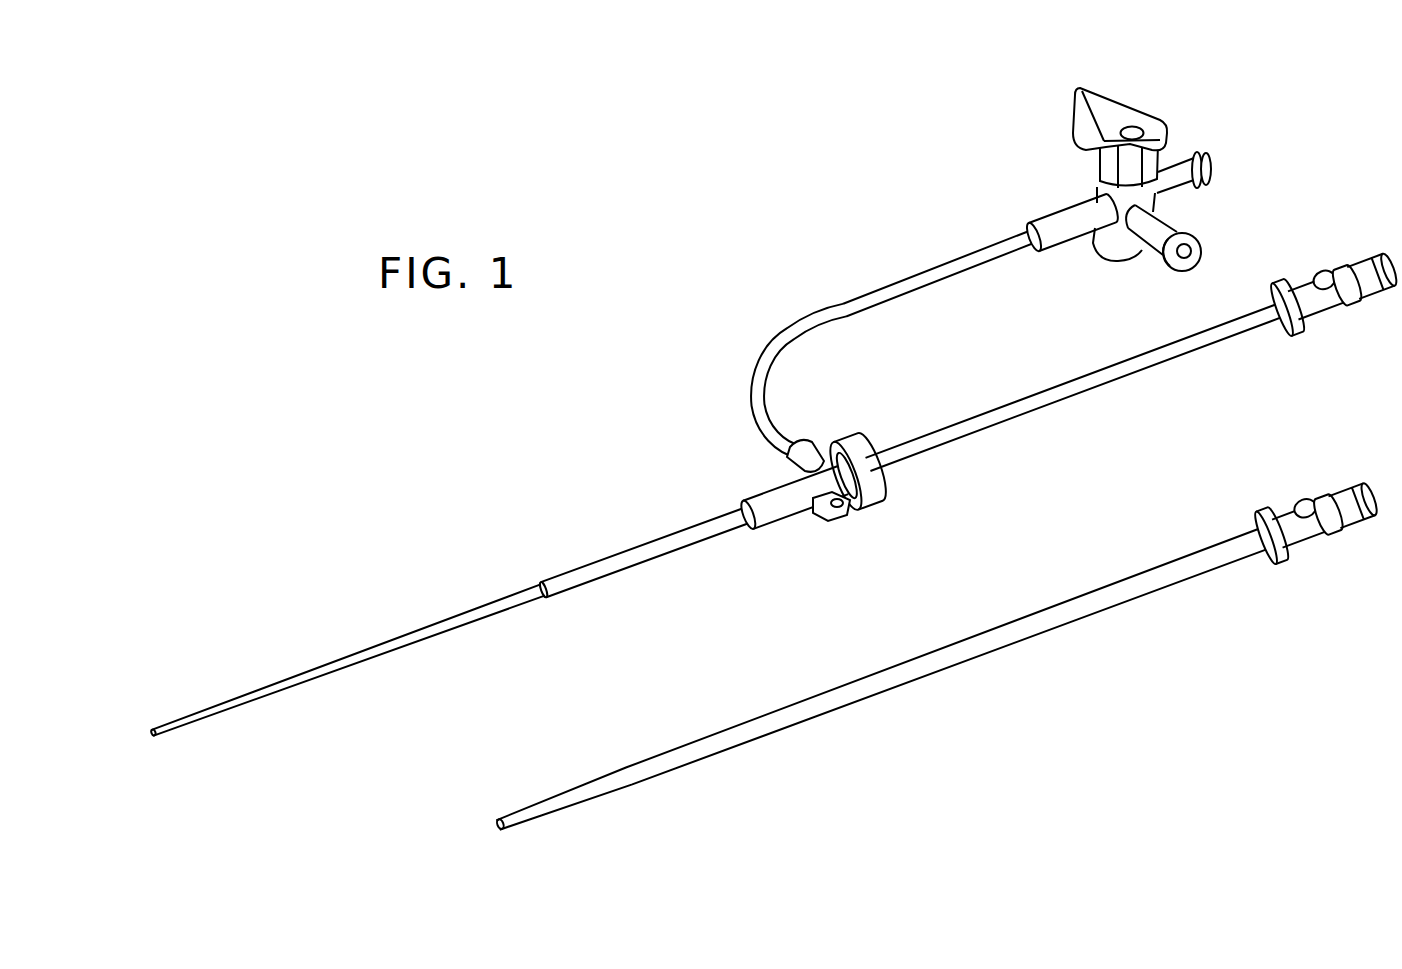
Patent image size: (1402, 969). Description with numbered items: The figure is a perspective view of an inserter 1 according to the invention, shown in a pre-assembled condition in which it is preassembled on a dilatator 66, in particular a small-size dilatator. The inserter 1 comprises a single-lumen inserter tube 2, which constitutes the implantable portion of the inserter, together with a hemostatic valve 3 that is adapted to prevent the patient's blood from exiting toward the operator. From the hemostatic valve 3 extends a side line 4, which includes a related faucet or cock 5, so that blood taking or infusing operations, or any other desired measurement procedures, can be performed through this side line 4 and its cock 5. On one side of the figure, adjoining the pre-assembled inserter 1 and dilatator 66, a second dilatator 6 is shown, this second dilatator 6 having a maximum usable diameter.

The inserter 1 is at (1182, 86).
The inserter tube 2 is at (685, 528).
The hemostatic valve 3 is at (772, 518).
The side line 4 is at (888, 283).
The faucet or cock 5 is at (1085, 135).
The second dilatator 6 is at (1153, 596).
The dilatator 66 is at (1103, 390).